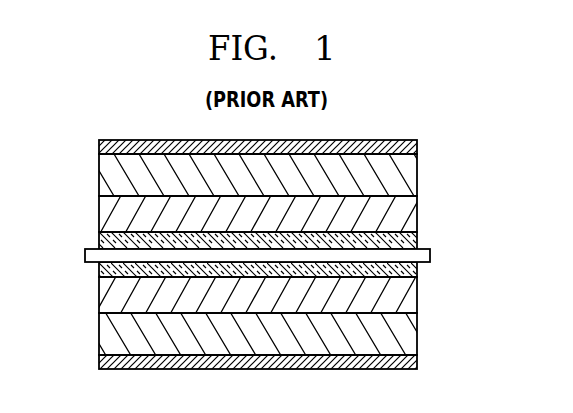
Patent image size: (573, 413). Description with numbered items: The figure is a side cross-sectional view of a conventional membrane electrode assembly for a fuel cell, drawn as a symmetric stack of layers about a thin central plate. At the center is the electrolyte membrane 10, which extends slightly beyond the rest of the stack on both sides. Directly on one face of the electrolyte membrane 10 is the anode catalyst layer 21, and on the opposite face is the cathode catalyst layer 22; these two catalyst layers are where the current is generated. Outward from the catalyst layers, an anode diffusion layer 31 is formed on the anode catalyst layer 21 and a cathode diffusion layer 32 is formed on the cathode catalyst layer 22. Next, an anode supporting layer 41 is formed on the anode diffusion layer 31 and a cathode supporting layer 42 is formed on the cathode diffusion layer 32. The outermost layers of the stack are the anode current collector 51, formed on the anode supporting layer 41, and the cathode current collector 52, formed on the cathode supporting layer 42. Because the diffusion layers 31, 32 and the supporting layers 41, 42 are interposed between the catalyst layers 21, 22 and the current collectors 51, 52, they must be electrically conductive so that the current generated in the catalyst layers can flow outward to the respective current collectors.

The electrolyte membrane 10 is at (85, 254).
The anode catalyst layer 21 is at (417, 241).
The cathode catalyst layer 22 is at (417, 272).
The anode diffusion layer 31 is at (410, 210).
The cathode diffusion layer 32 is at (412, 295).
The anode supporting layer 41 is at (410, 171).
The cathode supporting layer 42 is at (412, 332).
The anode current collector 51 is at (417, 150).
The cathode current collector 52 is at (417, 364).